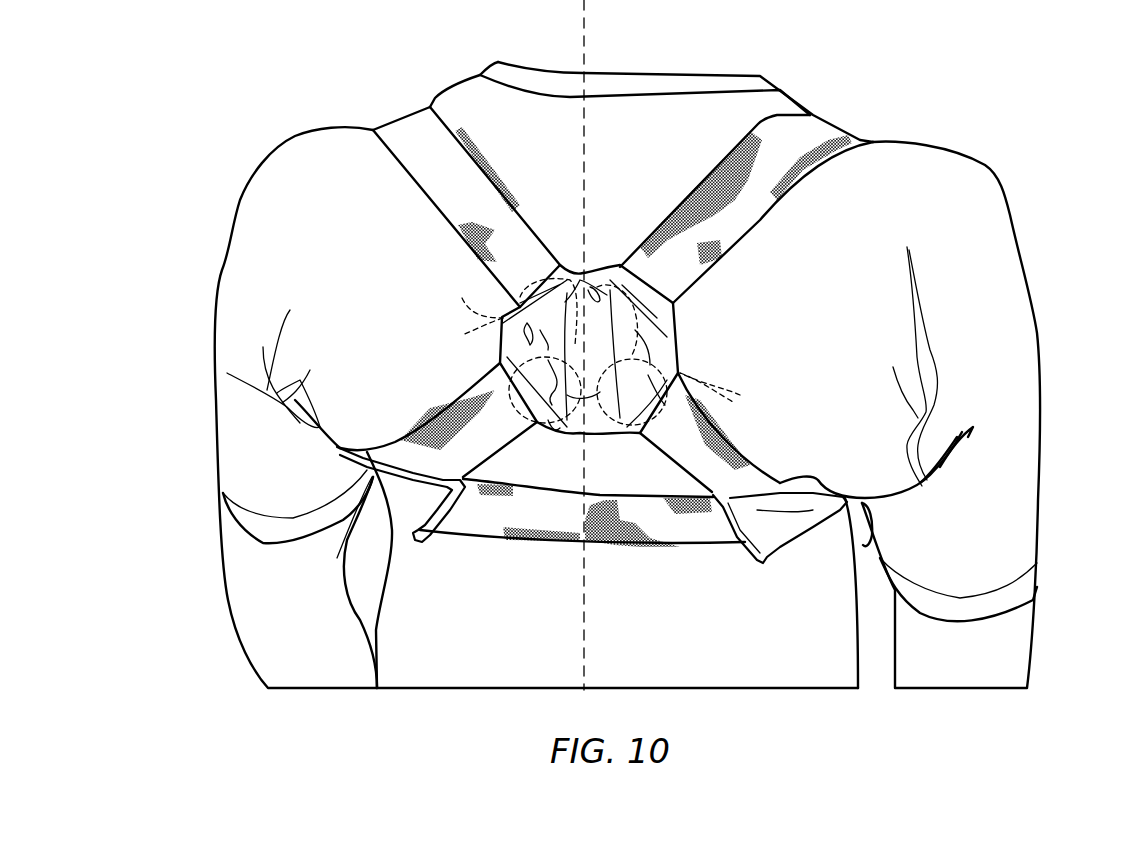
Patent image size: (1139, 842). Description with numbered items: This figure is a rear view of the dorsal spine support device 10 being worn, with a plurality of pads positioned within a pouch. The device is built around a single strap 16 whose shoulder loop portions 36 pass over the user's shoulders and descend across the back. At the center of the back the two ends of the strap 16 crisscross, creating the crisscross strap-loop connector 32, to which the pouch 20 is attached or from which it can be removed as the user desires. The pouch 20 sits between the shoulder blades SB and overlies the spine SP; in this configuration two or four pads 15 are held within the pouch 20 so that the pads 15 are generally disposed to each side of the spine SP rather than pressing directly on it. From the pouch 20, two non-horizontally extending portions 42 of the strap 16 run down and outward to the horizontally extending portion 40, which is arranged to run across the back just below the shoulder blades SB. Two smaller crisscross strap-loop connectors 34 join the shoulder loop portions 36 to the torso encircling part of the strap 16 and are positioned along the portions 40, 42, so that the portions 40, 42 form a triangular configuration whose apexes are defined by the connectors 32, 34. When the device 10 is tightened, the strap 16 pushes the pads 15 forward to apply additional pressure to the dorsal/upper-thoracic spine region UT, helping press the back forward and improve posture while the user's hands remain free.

The dorsal spine support device 10 is at (548, 122).
The pad 15 is at (605, 343).
The strap 16 is at (457, 186).
The pouch 20 is at (594, 362).
The crisscross strap-loop connector 32 is at (662, 340).
The crisscross strap-loop connector 34 is at (410, 507).
The shoulder loop portion 36 is at (402, 128).
The horizontally extending portion of the strap 40 is at (493, 521).
The non-horizontally extending portion of the strap 42 is at (442, 438).
The shoulder blades SB is at (428, 336).
The dorsal/upper-thoracic spine region UT is at (695, 366).
The spine SP is at (585, 31).